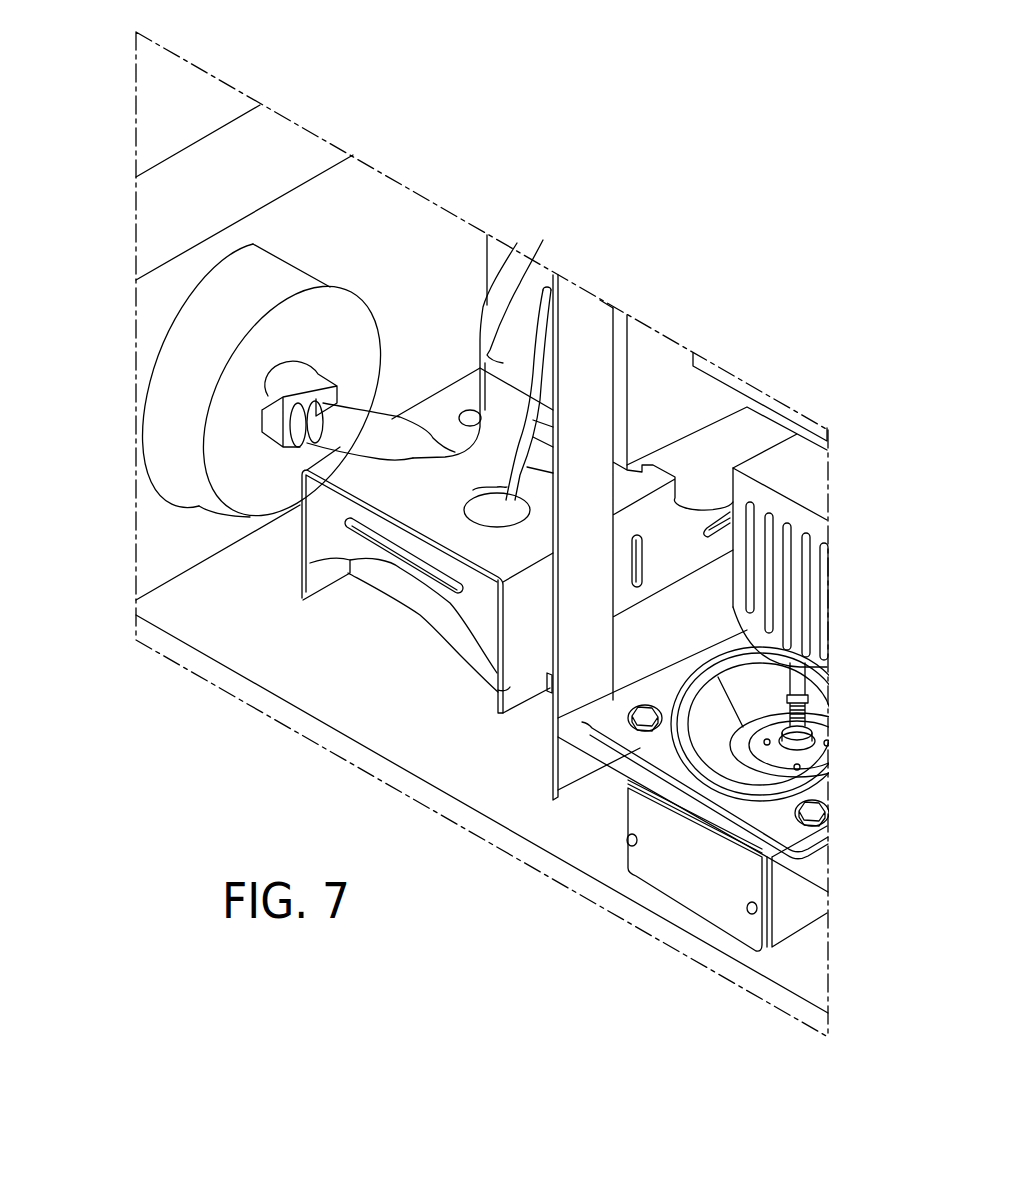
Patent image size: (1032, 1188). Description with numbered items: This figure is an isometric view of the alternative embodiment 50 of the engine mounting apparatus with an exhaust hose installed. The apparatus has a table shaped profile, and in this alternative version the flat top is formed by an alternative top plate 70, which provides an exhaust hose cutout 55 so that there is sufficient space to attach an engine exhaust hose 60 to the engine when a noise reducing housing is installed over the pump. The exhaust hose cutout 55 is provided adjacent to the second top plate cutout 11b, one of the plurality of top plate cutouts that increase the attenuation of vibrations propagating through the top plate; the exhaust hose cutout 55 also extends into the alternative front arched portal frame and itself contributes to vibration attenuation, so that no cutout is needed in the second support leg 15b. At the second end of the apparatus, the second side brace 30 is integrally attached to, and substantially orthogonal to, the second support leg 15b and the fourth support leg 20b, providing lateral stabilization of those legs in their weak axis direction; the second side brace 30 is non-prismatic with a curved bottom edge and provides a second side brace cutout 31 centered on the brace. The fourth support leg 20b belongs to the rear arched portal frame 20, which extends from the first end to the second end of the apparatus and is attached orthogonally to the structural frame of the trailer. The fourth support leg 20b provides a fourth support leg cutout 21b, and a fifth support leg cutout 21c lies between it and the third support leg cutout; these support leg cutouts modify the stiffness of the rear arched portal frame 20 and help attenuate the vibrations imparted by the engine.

The alternative embodiment 50 is at (238, 453).
The alternative top plate 70 is at (420, 420).
The engine exhaust hose 60 is at (513, 337).
The second top plate cutout 11b is at (463, 417).
The exhaust hose cutout 55 is at (507, 503).
The second side brace 30 is at (473, 617).
The second side brace cutout 31 is at (403, 558).
The second support leg 15b is at (315, 578).
The fourth support leg 20b is at (510, 687).
The rear arched portal frame 20 is at (668, 562).
The fifth support leg cutout 21c is at (728, 531).
The fourth support leg cutout 21b is at (641, 582).